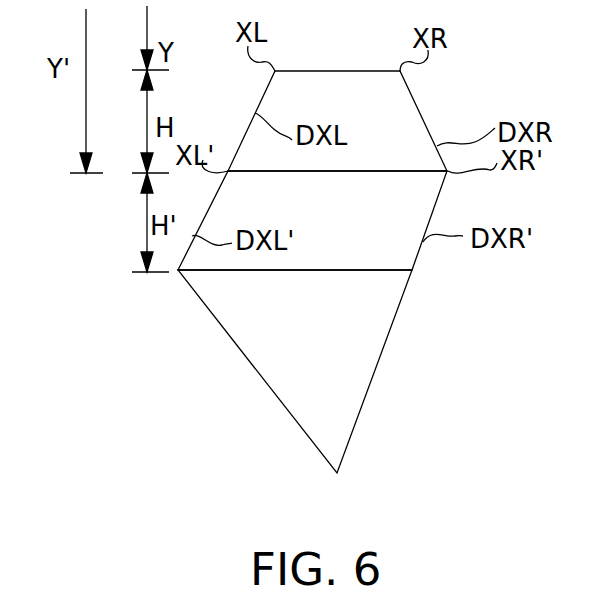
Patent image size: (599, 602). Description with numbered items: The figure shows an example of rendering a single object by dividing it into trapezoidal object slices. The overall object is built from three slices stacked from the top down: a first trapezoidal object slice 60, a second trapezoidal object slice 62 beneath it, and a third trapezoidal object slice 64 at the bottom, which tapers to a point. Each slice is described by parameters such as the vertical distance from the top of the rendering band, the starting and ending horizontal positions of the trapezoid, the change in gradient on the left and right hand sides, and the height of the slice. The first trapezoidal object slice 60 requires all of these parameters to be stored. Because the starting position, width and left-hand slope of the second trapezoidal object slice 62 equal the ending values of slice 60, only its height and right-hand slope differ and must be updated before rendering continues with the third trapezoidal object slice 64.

The first trapezoidal object slice 60 is at (385, 128).
The second trapezoidal object slice 62 is at (416, 214).
The third trapezoidal object slice 64 is at (228, 314).